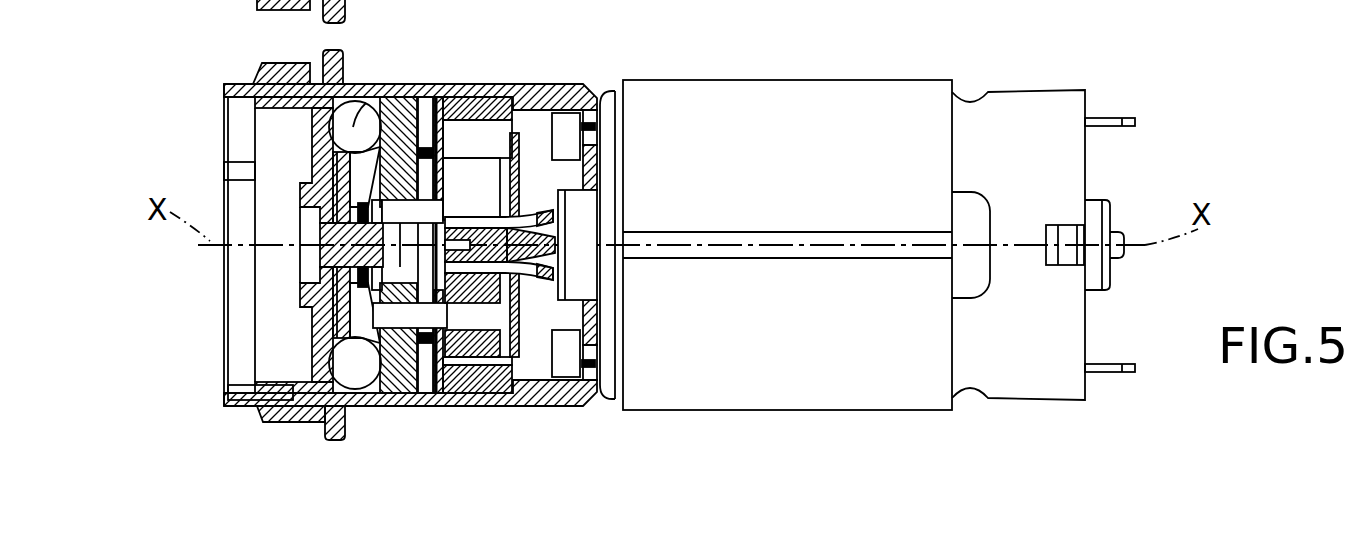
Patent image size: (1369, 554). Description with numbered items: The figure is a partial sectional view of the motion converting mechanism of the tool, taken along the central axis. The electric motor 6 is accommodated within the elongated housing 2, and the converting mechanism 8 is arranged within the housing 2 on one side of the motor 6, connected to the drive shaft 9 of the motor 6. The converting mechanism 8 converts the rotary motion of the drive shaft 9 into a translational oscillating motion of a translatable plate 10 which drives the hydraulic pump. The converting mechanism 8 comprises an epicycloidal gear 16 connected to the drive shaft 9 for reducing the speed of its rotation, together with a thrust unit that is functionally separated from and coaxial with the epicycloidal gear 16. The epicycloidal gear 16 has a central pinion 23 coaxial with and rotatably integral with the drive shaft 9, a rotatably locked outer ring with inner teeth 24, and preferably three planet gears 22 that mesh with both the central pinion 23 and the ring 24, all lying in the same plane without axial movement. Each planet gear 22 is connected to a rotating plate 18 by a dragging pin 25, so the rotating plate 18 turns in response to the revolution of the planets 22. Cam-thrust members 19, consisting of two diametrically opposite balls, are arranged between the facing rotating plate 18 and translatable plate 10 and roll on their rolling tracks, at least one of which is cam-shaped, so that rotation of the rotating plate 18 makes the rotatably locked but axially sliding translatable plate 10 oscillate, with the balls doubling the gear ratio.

The housing 2 is at (443, 84).
The electric motor 6 is at (843, 103).
The converting mechanism 8 is at (477, 143).
The drive shaft 9 is at (535, 213).
The translatable plate 10 is at (273, 136).
The epicycloidal gear 16 is at (474, 0).
The rotating plate 18 is at (374, 0).
The cam-thrust members 19 is at (408, 84).
The planet gears 22 is at (415, 318).
The central pinion 23 is at (518, 322).
The outer ring with inner teeth 24 is at (498, 393).
The dragging pin 25 is at (398, 367).